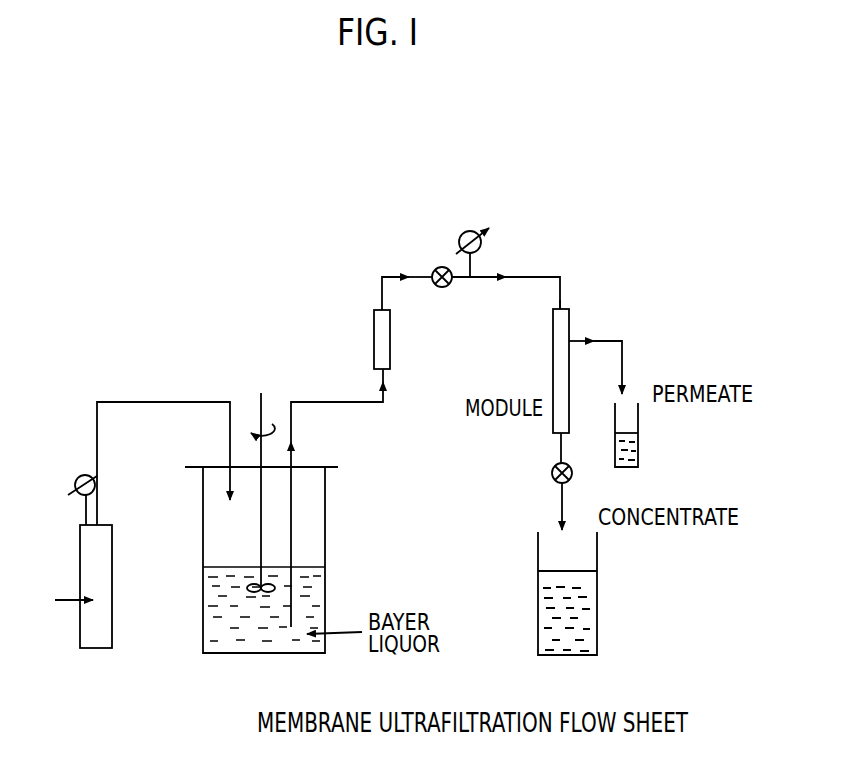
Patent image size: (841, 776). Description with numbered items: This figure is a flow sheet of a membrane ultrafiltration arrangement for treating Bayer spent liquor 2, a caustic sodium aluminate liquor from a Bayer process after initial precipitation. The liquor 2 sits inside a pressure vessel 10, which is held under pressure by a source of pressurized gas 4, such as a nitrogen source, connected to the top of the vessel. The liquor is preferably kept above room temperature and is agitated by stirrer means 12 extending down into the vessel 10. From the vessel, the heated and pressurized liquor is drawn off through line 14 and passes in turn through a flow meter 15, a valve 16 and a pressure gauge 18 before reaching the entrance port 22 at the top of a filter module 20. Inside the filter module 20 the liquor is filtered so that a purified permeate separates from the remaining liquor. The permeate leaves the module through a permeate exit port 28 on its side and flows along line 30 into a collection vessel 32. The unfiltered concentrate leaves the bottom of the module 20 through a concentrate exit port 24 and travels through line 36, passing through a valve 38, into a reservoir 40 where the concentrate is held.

The Bayer spent liquor 2 is at (232, 625).
The source of pressurized gas 4 is at (105, 562).
The pressure vessel 10 is at (317, 533).
The stirrer means 12 is at (259, 400).
The line 14 is at (357, 403).
The flow meter 15 is at (390, 343).
The valve 16 is at (435, 270).
The pressure gauge 18 is at (476, 231).
The filter module 20 is at (553, 356).
The entrance port 22 is at (562, 305).
The concentrate exit port 24 is at (566, 433).
The permeate exit port 28 is at (573, 336).
The line 30 is at (614, 339).
The vessel 32 is at (640, 422).
The line 36 is at (557, 446).
The valve 38 is at (573, 482).
The reservoir 40 is at (585, 616).